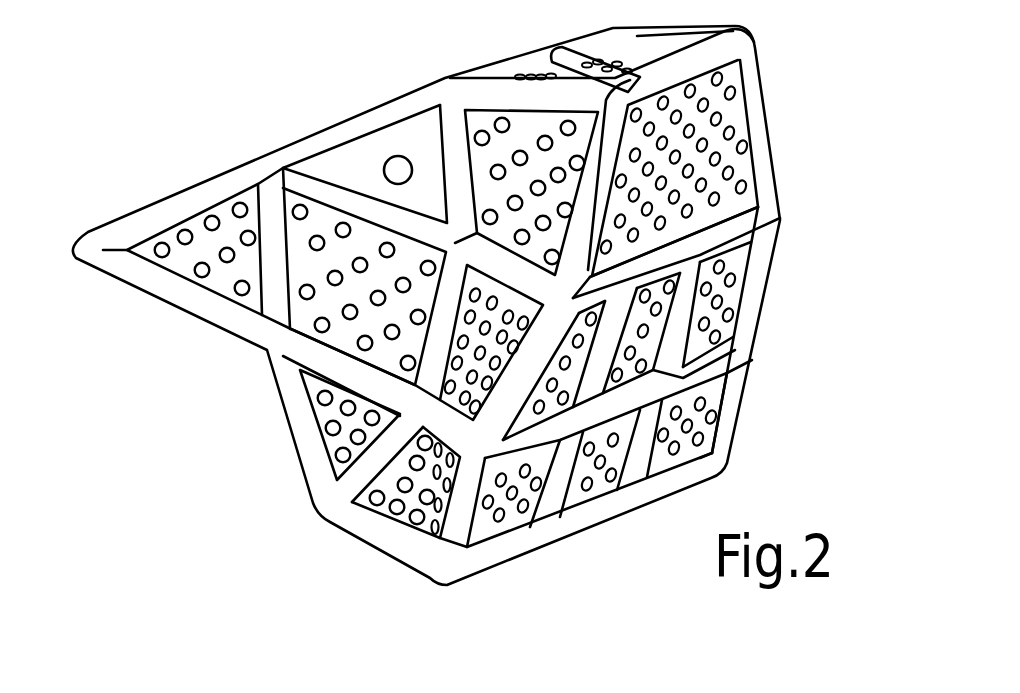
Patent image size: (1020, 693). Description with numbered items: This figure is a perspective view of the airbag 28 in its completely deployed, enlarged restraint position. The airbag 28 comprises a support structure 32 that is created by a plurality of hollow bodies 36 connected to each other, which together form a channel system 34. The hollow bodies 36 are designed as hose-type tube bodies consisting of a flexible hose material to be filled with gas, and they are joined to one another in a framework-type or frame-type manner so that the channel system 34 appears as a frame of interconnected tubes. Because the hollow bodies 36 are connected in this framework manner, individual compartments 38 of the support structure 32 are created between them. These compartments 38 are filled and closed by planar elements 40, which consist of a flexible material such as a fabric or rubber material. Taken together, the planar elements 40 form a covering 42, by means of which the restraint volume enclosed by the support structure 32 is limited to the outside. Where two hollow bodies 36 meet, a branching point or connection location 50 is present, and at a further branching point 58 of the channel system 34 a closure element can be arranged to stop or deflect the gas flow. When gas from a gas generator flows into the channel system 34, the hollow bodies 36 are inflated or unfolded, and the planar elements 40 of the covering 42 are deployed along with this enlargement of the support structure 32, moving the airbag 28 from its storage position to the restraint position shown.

The airbag 28 is at (128, 133).
The support structure 32 is at (801, 128).
The channel system 34 is at (748, 218).
The hollow bodies 36 is at (347, 133).
The compartments 38 is at (421, 138).
The planar elements 40 is at (367, 160).
The covering 42 is at (319, 274).
The connection location 50 is at (733, 457).
The branching point 58 is at (675, 266).